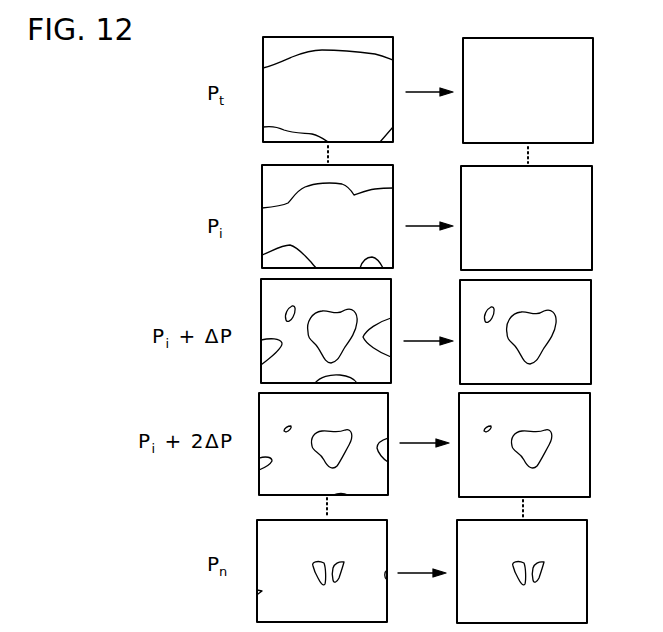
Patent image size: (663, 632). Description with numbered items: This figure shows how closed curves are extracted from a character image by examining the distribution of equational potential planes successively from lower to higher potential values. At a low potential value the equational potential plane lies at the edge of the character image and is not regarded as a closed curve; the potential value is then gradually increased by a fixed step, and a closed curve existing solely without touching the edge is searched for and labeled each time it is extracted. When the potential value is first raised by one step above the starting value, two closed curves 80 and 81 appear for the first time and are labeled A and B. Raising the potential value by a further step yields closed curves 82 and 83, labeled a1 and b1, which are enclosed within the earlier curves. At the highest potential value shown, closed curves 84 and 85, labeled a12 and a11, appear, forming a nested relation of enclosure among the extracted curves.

The closed curve 80 is at (548, 344).
The closed curve 81 is at (484, 323).
The closed curve 82 is at (542, 455).
The closed curve 83 is at (487, 433).
The closed curve 84 is at (538, 577).
The closed curve 85 is at (518, 577).